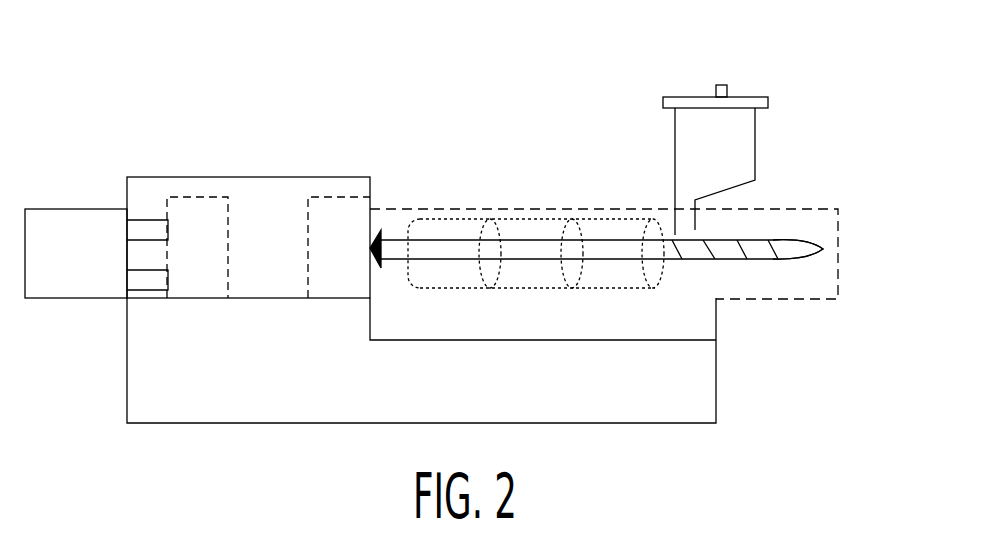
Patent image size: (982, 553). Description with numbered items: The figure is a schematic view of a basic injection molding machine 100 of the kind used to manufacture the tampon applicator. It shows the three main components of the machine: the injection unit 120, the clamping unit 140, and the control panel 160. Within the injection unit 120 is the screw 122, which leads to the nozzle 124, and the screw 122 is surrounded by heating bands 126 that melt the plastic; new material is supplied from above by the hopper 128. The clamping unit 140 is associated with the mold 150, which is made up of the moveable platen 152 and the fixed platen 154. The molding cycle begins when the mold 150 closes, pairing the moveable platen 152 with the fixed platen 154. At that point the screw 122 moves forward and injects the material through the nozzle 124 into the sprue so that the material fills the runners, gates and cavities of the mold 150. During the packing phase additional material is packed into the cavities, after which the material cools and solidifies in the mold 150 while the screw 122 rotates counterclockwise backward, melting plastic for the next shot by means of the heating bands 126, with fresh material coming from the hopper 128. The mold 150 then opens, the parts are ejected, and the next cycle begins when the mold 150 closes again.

The injection molding machine 100 is at (538, 89).
The injection unit 120 is at (841, 206).
The screw 122 is at (799, 239).
The nozzle 124 is at (382, 229).
The heating bands 126 is at (641, 272).
The hopper 128 is at (731, 159).
The clamping unit 140 is at (95, 268).
The mold 150 is at (232, 175).
The moveable platen 152 is at (215, 268).
The fixed platen 154 is at (358, 259).
The control panel 160 is at (555, 334).